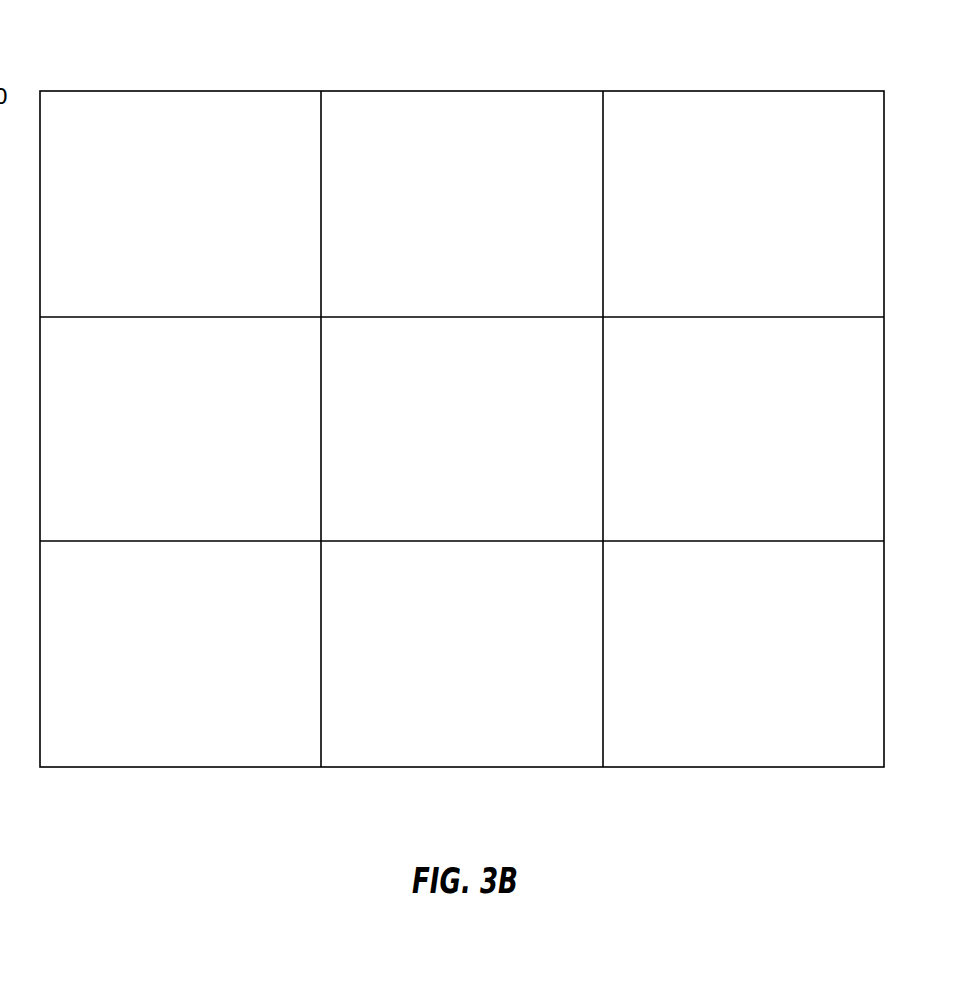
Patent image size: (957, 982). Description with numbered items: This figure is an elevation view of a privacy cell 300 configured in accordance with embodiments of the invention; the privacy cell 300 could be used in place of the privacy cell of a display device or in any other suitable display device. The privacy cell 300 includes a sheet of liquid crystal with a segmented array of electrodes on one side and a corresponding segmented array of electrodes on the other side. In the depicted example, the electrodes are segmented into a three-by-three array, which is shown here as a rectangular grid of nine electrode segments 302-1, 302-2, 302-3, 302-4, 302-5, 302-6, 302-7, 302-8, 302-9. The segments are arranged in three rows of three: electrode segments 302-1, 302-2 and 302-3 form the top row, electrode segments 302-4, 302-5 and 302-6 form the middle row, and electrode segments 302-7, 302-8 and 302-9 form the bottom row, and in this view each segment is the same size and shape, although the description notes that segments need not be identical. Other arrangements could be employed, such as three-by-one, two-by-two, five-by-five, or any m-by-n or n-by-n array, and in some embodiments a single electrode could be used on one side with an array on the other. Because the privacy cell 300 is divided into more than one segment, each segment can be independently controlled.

The privacy cell 300 is at (846, 72).
The electrode segment 302-1 is at (208, 214).
The electrode segment 302-2 is at (490, 214).
The electrode segment 302-3 is at (770, 214).
The electrode segment 302-4 is at (208, 440).
The electrode segment 302-5 is at (490, 440).
The electrode segment 302-6 is at (770, 440).
The electrode segment 302-7 is at (208, 665).
The electrode segment 302-8 is at (490, 665).
The electrode segment 302-9 is at (770, 665).